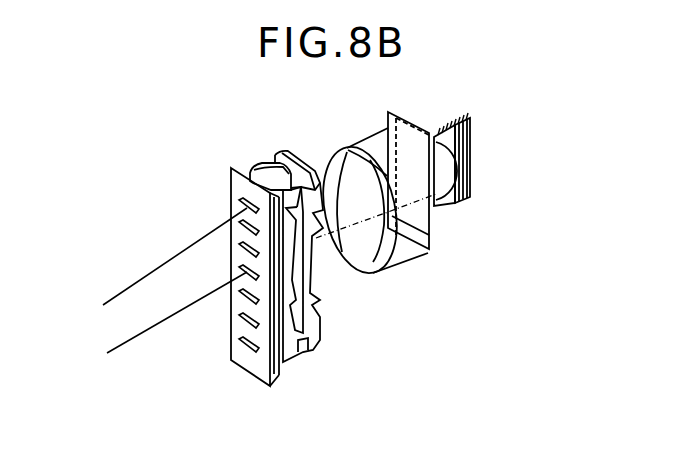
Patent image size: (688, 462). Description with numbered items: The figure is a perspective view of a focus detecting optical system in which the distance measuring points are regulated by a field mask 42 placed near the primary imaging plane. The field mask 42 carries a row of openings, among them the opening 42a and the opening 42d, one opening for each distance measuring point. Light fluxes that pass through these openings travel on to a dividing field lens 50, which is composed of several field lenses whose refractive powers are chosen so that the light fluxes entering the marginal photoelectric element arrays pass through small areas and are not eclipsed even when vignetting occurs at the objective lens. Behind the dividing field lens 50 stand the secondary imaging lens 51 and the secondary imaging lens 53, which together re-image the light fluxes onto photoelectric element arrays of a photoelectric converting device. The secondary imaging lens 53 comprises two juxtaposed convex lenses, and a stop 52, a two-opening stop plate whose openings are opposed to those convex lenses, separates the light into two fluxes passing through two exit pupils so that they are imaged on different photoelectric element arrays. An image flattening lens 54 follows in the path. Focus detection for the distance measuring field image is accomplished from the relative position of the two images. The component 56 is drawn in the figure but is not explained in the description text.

The field mask 42 is at (247, 371).
The opening 42a is at (245, 200).
The opening 42d is at (243, 272).
The dividing field lens 50 is at (316, 333).
The secondary imaging lens 51 is at (388, 260).
The two-opening stop plate 52 is at (430, 254).
The secondary imaging lens 53 is at (436, 218).
The image flattening lens 54 is at (436, 185).
The lead pins 56 is at (471, 161).